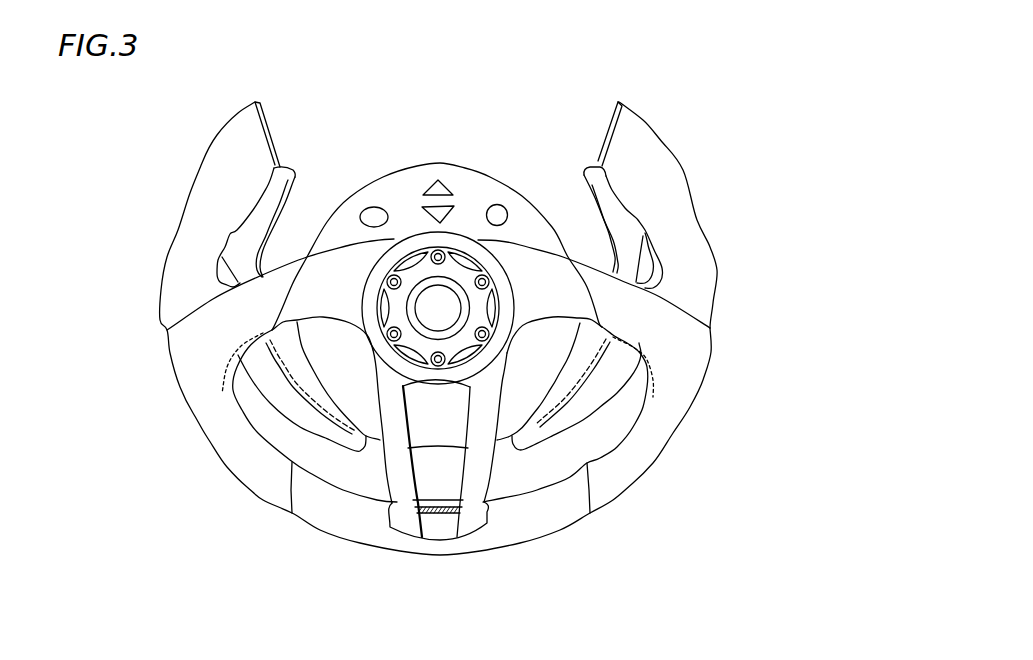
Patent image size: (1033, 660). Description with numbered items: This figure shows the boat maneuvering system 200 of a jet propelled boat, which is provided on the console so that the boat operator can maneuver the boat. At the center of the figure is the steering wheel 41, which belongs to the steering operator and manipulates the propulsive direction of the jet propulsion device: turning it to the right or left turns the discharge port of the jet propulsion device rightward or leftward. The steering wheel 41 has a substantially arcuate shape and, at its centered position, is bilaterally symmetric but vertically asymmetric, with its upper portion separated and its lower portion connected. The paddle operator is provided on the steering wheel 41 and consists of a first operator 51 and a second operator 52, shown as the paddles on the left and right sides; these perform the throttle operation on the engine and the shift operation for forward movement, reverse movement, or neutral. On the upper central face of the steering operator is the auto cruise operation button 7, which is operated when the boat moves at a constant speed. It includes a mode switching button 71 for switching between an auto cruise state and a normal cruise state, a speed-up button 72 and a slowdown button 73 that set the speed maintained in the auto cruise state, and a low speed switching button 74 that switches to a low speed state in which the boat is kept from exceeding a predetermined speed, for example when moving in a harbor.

The boat maneuvering system 200 is at (673, 97).
The auto cruise operation button 7 is at (460, 143).
The mode switching button 71 is at (371, 206).
The speed-up button 72 is at (436, 178).
The slowdown button 73 is at (426, 204).
The low speed switching button 74 is at (497, 204).
The steering wheel 41 is at (680, 177).
The first operator 51 is at (632, 255).
The second operator 52 is at (240, 250).